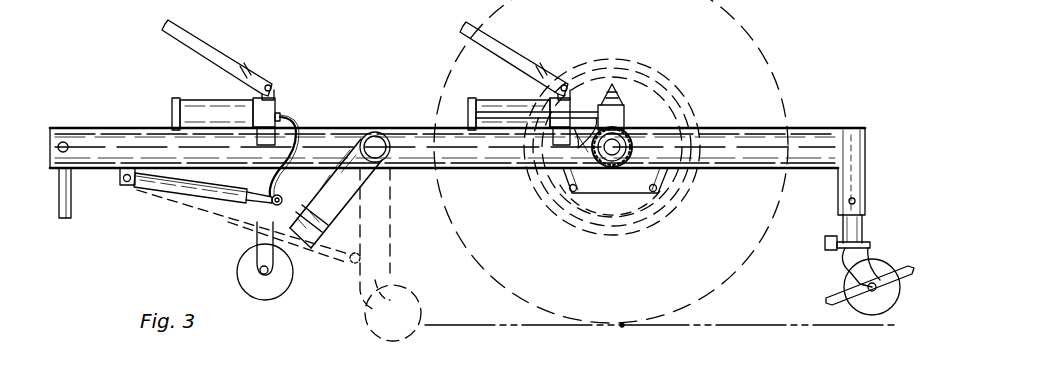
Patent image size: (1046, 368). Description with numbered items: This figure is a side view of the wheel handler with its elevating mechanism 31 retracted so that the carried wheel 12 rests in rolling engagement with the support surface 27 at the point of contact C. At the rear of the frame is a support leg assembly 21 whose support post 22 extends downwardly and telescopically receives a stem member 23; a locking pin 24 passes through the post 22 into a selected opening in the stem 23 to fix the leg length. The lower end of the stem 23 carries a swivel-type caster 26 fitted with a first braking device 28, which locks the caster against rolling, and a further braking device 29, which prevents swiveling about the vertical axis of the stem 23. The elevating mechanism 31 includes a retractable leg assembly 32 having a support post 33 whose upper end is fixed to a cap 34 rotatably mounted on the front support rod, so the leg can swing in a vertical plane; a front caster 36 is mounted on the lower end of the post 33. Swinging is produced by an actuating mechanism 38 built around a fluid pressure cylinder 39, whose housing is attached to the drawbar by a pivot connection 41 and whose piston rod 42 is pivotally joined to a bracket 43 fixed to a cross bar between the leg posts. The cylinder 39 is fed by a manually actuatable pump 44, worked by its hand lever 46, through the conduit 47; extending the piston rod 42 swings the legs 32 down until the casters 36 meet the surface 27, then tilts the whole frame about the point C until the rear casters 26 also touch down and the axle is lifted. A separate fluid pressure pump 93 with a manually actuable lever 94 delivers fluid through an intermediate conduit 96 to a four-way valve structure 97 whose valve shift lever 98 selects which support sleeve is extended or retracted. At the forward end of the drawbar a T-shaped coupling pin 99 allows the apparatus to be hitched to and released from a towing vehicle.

The wheel 12 is at (745, 68).
The support leg assembly 21 is at (457, 148).
The support post 22 is at (860, 152).
The stem member 23 is at (860, 230).
The locking pin 24 is at (855, 200).
The swivel-type support roller or caster 26 is at (845, 285).
The support surface 27 is at (742, 325).
The first braking device 28 is at (905, 266).
The braking device 29 is at (827, 238).
The elevating mechanism 31 is at (330, 272).
The retractable leg assembly 32 is at (345, 203).
The support post 33 is at (346, 158).
The cap 34 is at (386, 132).
The swivel-type support roller or caster 36 is at (272, 290).
The actuating mechanism 38 is at (160, 210).
The fluid pressure cylinder 39 is at (212, 195).
The pivot connection 41 is at (126, 185).
The piston rod 42 is at (262, 222).
The bracket 43 is at (297, 190).
The manually actuatable pump 44 is at (195, 105).
The pump handle 46 is at (200, 48).
The conduit 47 is at (296, 114).
The fluid pressure pump 93 is at (503, 105).
The manually actuable lever 94 is at (494, 46).
The intermediate conduit 96 is at (525, 132).
The valve structure 97 is at (626, 106).
The valve shift lever 98 is at (617, 96).
The T-shaped coupling pin 99 is at (64, 200).
The point of contact C is at (622, 326).